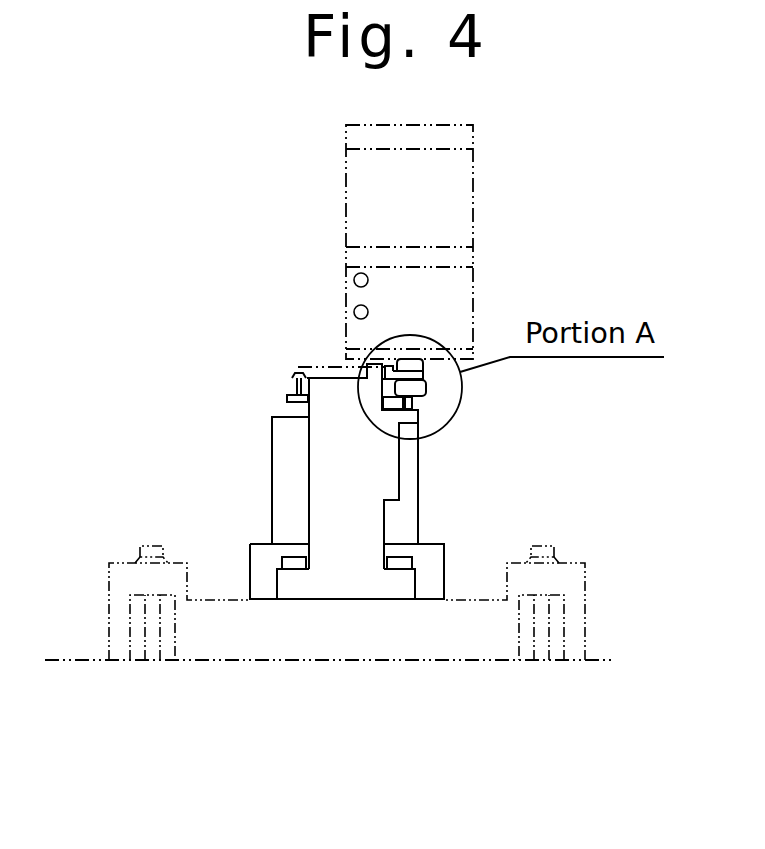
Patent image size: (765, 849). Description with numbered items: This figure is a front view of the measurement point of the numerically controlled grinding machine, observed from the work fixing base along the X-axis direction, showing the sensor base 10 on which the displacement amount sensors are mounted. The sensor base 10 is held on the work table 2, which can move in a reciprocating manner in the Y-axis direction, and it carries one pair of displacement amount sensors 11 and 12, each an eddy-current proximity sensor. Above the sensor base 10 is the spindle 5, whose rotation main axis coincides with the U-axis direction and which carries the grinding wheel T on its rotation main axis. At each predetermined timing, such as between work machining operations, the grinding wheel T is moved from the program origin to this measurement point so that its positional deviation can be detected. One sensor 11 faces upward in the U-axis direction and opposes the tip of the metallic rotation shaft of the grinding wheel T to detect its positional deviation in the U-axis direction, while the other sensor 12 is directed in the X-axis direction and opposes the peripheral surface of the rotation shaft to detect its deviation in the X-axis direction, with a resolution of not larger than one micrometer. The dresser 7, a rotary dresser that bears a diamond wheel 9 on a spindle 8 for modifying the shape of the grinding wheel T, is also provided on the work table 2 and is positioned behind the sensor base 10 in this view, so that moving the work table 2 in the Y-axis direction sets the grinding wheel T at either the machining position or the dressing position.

The work table 2 is at (460, 661).
The spindle 5 is at (473, 212).
The dresser 7 is at (258, 508).
The spindle 8 is at (272, 462).
The diamond wheel 9 is at (291, 387).
The sensor base 10 is at (390, 473).
The displacement amount sensor 11 is at (415, 405).
The displacement amount sensor 12 is at (388, 366).
The grinding wheel T is at (426, 387).